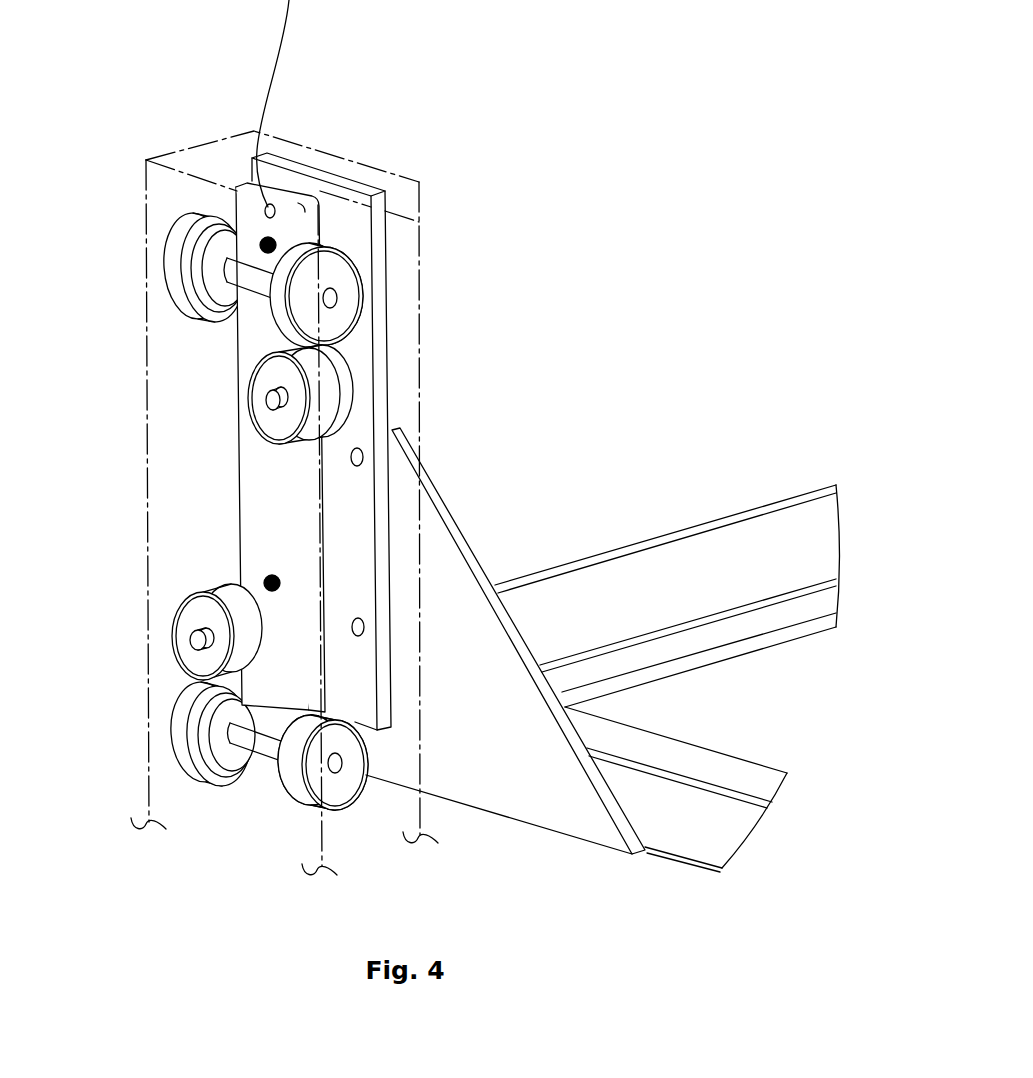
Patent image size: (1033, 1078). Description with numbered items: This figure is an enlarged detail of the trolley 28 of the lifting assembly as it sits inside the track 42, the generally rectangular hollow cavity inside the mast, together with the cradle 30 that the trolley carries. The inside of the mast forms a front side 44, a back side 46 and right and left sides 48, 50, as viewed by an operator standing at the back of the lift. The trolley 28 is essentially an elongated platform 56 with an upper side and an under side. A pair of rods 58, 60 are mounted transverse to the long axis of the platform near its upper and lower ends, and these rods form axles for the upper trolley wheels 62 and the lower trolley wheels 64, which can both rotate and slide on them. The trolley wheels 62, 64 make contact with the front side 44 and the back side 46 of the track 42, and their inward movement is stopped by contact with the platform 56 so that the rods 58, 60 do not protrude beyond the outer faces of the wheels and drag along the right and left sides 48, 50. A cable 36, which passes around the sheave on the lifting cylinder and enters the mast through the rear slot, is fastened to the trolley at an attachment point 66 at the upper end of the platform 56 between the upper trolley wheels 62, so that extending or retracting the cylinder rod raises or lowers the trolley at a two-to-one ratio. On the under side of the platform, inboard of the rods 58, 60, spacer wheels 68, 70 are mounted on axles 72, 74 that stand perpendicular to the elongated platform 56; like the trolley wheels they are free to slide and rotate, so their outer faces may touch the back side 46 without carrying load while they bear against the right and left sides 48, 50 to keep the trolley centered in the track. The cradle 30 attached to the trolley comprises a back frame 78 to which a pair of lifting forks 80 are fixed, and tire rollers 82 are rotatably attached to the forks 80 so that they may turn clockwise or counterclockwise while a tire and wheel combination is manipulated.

The trolley 28 is at (393, 484).
The cradle 30 is at (563, 562).
The cable 36 is at (278, 70).
The track 42 is at (223, 158).
The front side 44 is at (387, 178).
The back side 46 is at (152, 410).
The right side 48 is at (403, 227).
The left side 50 is at (170, 350).
The elongated platform 56 is at (240, 341).
The rod 58 is at (223, 272).
The rod 60 is at (258, 757).
The upper trolley wheels 62 is at (176, 222).
The lower trolley wheels 64 is at (172, 746).
The attachment point 66 is at (276, 207).
The spacer wheel 68 is at (340, 402).
The spacer wheel 70 is at (185, 600).
The axle 72 is at (288, 396).
The axle 74 is at (196, 645).
The back frame 78 is at (660, 780).
The lifting forks 80 is at (663, 678).
The tire rollers 82 is at (642, 547).